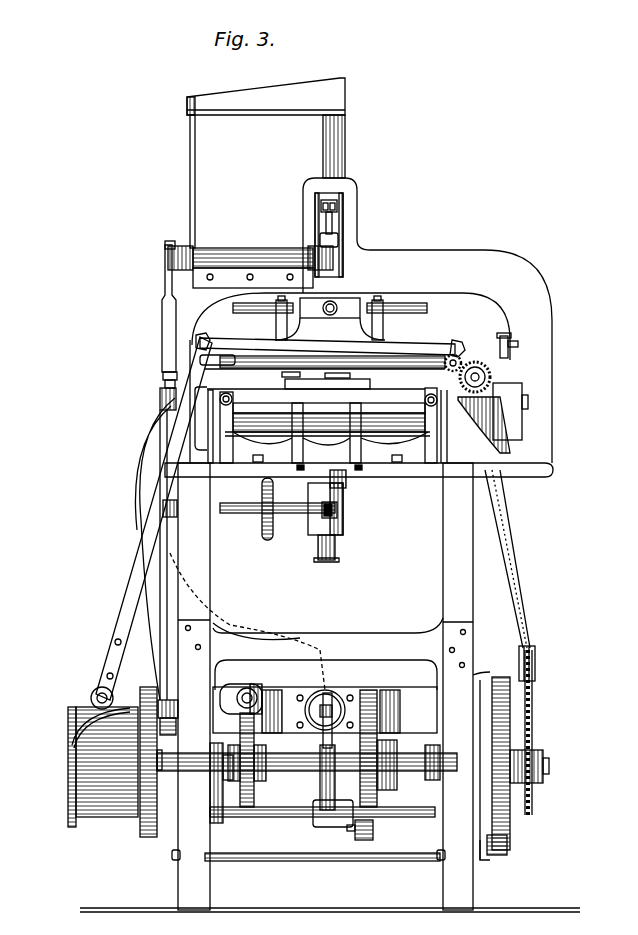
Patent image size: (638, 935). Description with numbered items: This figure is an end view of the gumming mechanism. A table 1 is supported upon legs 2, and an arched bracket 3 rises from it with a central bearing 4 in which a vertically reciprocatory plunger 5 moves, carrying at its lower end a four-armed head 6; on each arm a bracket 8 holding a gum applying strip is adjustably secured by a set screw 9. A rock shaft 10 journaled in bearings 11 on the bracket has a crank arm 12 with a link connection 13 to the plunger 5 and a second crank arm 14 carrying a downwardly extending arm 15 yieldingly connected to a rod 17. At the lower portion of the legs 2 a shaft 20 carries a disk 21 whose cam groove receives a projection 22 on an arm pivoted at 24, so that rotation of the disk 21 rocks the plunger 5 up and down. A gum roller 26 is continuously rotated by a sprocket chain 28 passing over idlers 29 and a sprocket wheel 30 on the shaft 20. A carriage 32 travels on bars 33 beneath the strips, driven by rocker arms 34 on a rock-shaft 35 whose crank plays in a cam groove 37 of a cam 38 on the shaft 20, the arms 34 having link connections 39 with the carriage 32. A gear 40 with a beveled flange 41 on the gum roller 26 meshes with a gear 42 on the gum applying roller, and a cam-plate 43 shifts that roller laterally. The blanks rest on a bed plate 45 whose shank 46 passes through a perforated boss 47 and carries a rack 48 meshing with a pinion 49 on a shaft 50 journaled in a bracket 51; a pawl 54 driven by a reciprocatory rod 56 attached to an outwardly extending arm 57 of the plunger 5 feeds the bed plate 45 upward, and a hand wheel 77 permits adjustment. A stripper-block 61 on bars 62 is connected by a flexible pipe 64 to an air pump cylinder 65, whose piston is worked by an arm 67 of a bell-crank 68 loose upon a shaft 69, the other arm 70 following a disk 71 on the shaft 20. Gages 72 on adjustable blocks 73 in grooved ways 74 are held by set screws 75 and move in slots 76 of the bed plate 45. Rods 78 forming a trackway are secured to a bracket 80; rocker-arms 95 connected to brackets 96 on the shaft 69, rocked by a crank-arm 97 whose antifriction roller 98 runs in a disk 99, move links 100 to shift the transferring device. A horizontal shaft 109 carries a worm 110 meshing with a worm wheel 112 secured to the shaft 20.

The table 1 is at (396, 470).
The legs 2 is at (325, 650).
The arched bracket 3 is at (371, 351).
The central bearing 4 is at (350, 228).
The vertically reciprocatory plunger 5 is at (336, 172).
The four-armed head 6 is at (265, 315).
The bracket 8 is at (372, 324).
The set screw 9 is at (277, 300).
The rock shaft 10 is at (250, 258).
The bearings 11 is at (196, 258).
The crank arm 12 is at (340, 246).
The link connection 13 is at (346, 218).
The crank arm 14 is at (171, 243).
The downwardly extending arm 15 is at (165, 305).
The rod 17 is at (161, 597).
The shaft 20 is at (290, 777).
The disk 21 is at (144, 840).
The projection 22 is at (180, 712).
The pivot 24 is at (171, 737).
The gum roller 26 is at (512, 395).
The sprocket chain 28 is at (515, 574).
The idlers 29 is at (533, 651).
The sprocket wheel 30 is at (536, 800).
The carriage 32 is at (500, 348).
The bars 33 is at (400, 362).
The rocker arms 34 is at (140, 558).
The rock-shaft 35 is at (92, 697).
The cam groove 37 is at (70, 749).
The cam 38 is at (113, 815).
The link connections 39 is at (398, 348).
The gear 40 is at (490, 380).
The beveled flange 41 is at (485, 374).
The gear 42 is at (461, 358).
The cam-plate 43 is at (240, 362).
The bed plate 45 is at (259, 432).
The shank 46 is at (336, 547).
The perforated boss 47 is at (344, 523).
The rack 48 is at (327, 562).
The pinion 49 is at (338, 510).
The shaft 50 is at (244, 505).
The bracket 51 is at (180, 508).
The pawl 54 is at (287, 373).
The reciprocatory rod 56 is at (198, 226).
The outwardly extending arm 57 is at (236, 97).
The stripper-block 61 is at (360, 385).
The bars 62 is at (333, 373).
The flexible pipe 64 is at (150, 425).
The air pump cylinder 65 is at (336, 694).
The arm 67 is at (326, 787).
The bell-crank 68 is at (331, 828).
The shaft 69 is at (287, 818).
The arm 70 is at (359, 838).
The disk 71 is at (378, 797).
The gages 72 is at (293, 456).
The adjustable blocks 73 is at (308, 482).
The grooved ways 74 is at (300, 471).
The set screws 75 is at (260, 456).
The slots 76 is at (318, 420).
The hand wheel 77 is at (271, 540).
The rods 78 is at (236, 408).
The bracket 80 is at (236, 422).
The rocker-arms 95 is at (218, 600).
The brackets 96 is at (66, 770).
The crank-arm 97 is at (511, 826).
The antifriction roller 98 is at (489, 856).
The disk 99 is at (509, 851).
The link 100 is at (228, 393).
The horizontal shaft 109 is at (262, 696).
The worm 110 is at (249, 688).
The worm wheel 112 is at (267, 745).